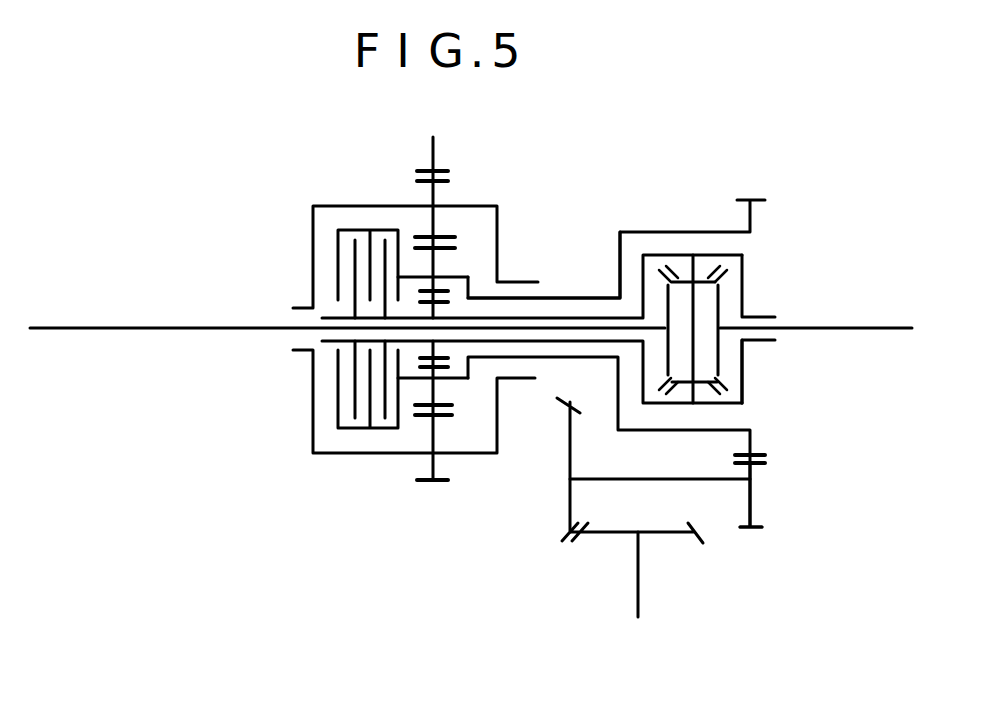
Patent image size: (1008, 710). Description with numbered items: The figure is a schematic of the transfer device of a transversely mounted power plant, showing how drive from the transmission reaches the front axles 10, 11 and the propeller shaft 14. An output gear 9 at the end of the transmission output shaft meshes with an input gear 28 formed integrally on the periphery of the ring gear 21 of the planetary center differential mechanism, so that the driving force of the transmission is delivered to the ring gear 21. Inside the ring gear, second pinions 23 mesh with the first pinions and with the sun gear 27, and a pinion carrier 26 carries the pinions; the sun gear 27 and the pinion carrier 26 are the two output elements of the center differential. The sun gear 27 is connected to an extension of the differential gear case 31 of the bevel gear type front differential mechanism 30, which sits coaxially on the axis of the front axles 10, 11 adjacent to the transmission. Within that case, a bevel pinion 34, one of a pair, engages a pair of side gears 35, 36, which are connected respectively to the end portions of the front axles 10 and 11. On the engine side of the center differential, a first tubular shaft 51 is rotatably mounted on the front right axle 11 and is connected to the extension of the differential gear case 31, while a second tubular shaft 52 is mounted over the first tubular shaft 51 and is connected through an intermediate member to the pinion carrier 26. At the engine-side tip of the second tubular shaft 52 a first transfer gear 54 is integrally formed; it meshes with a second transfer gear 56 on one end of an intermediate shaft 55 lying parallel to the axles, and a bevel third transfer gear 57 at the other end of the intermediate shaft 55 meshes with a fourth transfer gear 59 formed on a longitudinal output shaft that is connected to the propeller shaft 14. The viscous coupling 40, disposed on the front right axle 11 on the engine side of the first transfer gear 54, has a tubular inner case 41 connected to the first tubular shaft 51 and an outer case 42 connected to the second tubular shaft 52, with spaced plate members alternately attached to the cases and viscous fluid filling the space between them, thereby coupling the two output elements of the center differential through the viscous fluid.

The output gear 9 is at (446, 163).
The front axle 10 is at (230, 326).
The front right axle 11 is at (835, 327).
The propeller shaft 14 is at (642, 597).
The ring gear 21 is at (443, 231).
The second pinions 23 is at (452, 408).
The pinion carrier 26 is at (545, 359).
The sun gear 27 is at (452, 307).
The input gear 28 is at (417, 181).
The front differential mechanism 30 is at (752, 263).
The differential gear case 31 is at (742, 388).
The pinion 34 is at (702, 386).
The side gear 35 is at (665, 350).
The side gear 36 is at (722, 312).
The viscous coupling 40 is at (357, 420).
The tubular inner case 41 is at (353, 283).
The outer case 42 is at (338, 250).
The first tubular shaft 51 is at (540, 317).
The second tubular shaft 52 is at (590, 297).
The first transfer gear 54 is at (765, 458).
The intermediate shaft 55 is at (720, 482).
The second transfer gear 56 is at (752, 507).
The third transfer gear 57 is at (568, 512).
The fourth transfer gear 59 is at (605, 534).